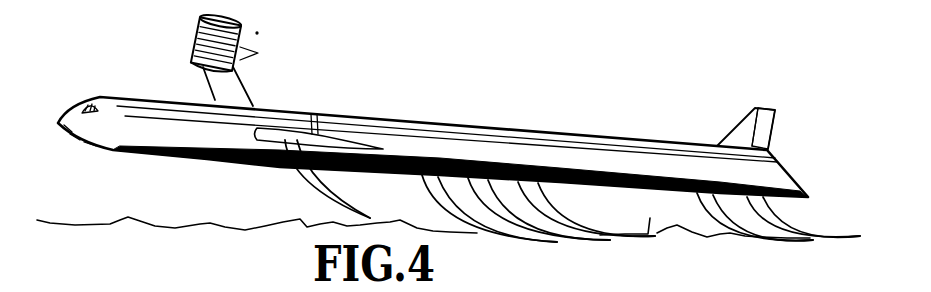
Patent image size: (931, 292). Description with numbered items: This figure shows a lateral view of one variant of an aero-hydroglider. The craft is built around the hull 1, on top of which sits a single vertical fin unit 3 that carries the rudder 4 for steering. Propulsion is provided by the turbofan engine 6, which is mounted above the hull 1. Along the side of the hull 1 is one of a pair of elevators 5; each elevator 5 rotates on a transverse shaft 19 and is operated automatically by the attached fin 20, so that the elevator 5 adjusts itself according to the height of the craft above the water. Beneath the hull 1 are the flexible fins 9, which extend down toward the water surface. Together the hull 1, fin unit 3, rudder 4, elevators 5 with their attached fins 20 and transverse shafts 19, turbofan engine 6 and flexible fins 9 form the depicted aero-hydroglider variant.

The hull 1 is at (513, 133).
The single vertical fin unit 3 is at (740, 133).
The rudder 4 is at (765, 132).
The elevator 5 is at (253, 162).
The turbofan engine 6 is at (200, 40).
The flexible fins 9 is at (433, 189).
The transverse shaft 19 is at (315, 134).
The attached fin 20 is at (303, 170).